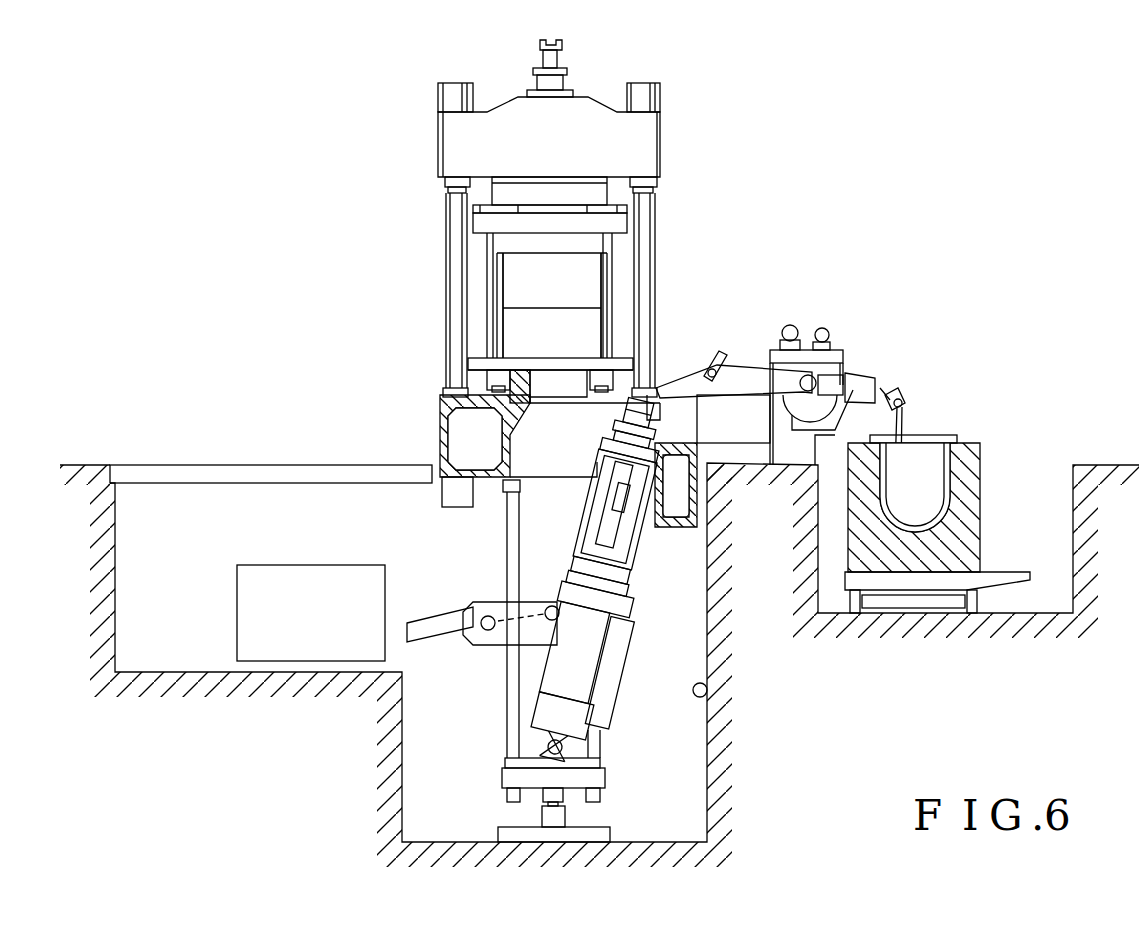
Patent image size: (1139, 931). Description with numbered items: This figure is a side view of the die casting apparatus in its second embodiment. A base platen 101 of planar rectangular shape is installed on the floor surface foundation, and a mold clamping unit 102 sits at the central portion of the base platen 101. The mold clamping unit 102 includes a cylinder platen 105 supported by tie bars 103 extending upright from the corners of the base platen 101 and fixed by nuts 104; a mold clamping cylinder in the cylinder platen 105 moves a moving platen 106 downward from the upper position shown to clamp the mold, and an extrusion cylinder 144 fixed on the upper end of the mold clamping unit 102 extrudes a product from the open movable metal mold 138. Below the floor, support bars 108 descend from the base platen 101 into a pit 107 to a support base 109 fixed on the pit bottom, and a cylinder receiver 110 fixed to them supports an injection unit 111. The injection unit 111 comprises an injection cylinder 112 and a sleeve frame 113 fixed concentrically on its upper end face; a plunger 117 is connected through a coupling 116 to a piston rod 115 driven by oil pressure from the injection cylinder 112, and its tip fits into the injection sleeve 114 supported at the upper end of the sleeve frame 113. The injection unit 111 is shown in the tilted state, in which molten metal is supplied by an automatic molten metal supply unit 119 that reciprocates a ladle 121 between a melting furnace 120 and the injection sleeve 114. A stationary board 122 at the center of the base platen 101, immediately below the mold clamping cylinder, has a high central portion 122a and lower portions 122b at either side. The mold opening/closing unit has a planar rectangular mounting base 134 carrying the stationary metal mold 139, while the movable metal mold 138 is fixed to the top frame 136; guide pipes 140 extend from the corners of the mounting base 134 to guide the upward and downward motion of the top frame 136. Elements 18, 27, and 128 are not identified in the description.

The trunnion bracket 18 is at (482, 642).
The lower die 27 is at (474, 439).
The base platen 101 is at (452, 451).
The mold clamping unit 102 is at (578, 108).
The tie bars 103 is at (452, 212).
The nuts 104 is at (456, 100).
The cylinder platen 105 is at (658, 147).
The moving platen 106 is at (508, 190).
The pit 107 is at (707, 690).
The support bars 108 is at (505, 562).
The support base 109 is at (600, 830).
The cylinder receiver 110 is at (607, 784).
The injection unit 111 is at (643, 580).
The injection cylinder 112 is at (583, 663).
The sleeve frame 113 is at (646, 537).
The injection sleeve 114 is at (635, 428).
The piston rod 115 is at (599, 576).
The coupling 116 is at (621, 498).
The plunger 117 is at (614, 504).
The automatic molten metal supply unit 119 is at (798, 396).
The melting furnace 120 is at (958, 455).
The ladle 121 is at (698, 417).
The stationary board 122 is at (551, 295).
The high central portion 122a is at (565, 376).
The lower portions 122b is at (450, 382).
The guide pockets 128 is at (492, 390).
The mounting base 134 is at (580, 368).
The top frame 136 is at (622, 215).
The movable metal mold 138 is at (597, 268).
The stationary metal mold 139 is at (508, 318).
The guide pipes 140 is at (491, 265).
The extrusion cylinder 144 is at (560, 82).